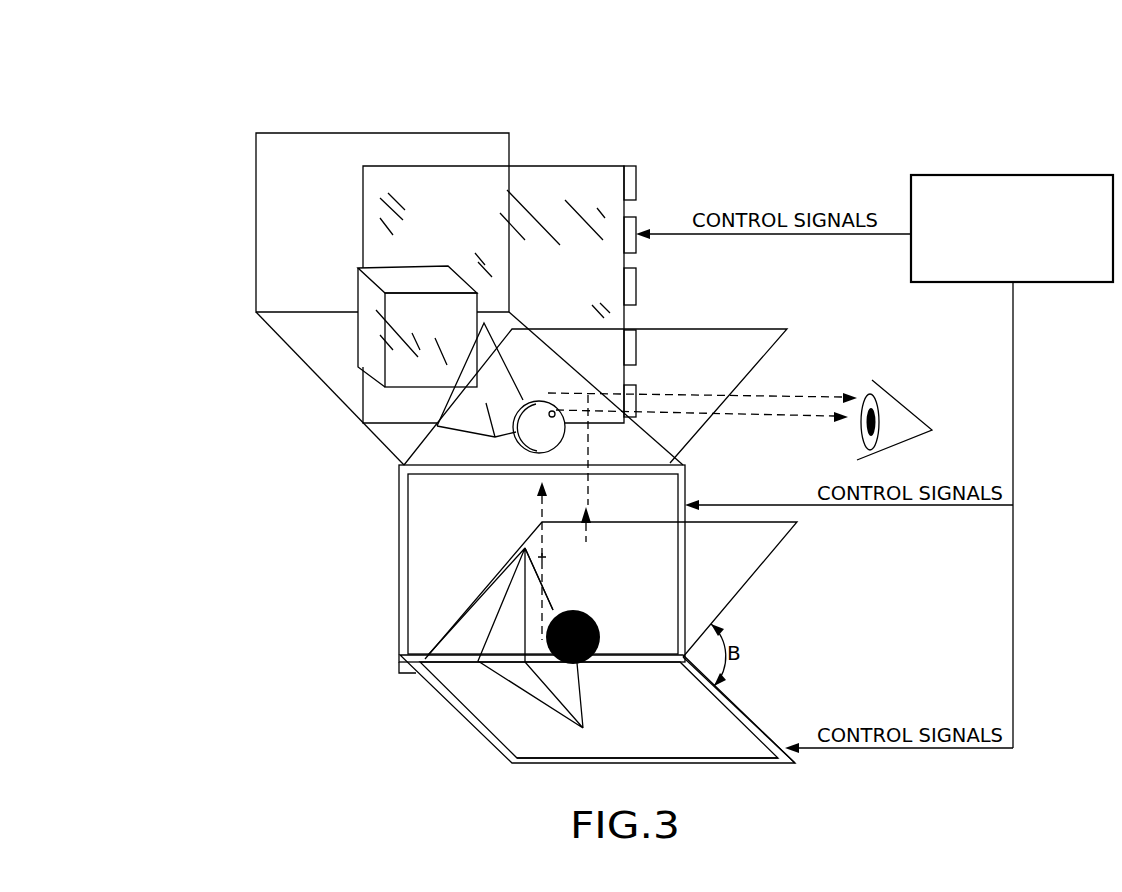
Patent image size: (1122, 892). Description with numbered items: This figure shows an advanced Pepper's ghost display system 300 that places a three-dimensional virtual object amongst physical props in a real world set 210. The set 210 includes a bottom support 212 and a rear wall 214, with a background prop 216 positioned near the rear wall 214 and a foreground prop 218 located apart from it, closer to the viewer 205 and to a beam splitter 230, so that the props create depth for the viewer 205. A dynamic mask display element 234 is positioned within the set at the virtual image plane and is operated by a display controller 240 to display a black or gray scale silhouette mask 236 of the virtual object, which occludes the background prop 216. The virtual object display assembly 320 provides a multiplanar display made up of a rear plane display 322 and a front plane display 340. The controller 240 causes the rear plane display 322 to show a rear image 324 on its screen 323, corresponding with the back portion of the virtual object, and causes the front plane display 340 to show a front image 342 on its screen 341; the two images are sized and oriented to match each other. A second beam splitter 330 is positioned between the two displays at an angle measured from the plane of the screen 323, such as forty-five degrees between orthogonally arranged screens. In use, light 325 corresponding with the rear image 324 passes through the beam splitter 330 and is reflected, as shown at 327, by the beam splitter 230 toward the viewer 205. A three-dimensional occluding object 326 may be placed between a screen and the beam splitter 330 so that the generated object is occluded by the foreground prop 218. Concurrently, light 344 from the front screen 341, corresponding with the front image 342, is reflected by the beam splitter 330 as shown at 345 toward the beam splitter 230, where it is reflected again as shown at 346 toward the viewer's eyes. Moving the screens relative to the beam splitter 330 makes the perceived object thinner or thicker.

The advanced Pepper's ghost display system 300 is at (211, 111).
The real world set 210 is at (234, 345).
The bottom support 212 is at (315, 373).
The rear wall 214 is at (256, 235).
The background prop 216 is at (425, 266).
The foreground prop 218 is at (552, 401).
The beam splitter 230 is at (742, 329).
The dynamic mask display element 234 is at (640, 176).
The mask 236 is at (486, 323).
The display controller 240 is at (1036, 175).
The viewer 205 is at (907, 382).
The light reflected toward viewer 346 is at (786, 392).
The reflected light of rear image 327 is at (748, 420).
The reflected light of front image 345 is at (593, 455).
The light from front plane display screen 344 is at (567, 556).
The light corresponding with rear image 325 is at (538, 521).
The front plane display 340 is at (369, 515).
The front plane display screen 341 is at (423, 535).
The beam splitter of display assembly 330 is at (762, 566).
The virtual object display assembly 320 is at (312, 636).
The rear plane display 322 is at (768, 700).
The rear plane display screen 323 is at (728, 745).
The rear image 324 is at (581, 698).
The front image 342 is at (553, 603).
The 3D occluding object 326 is at (598, 622).